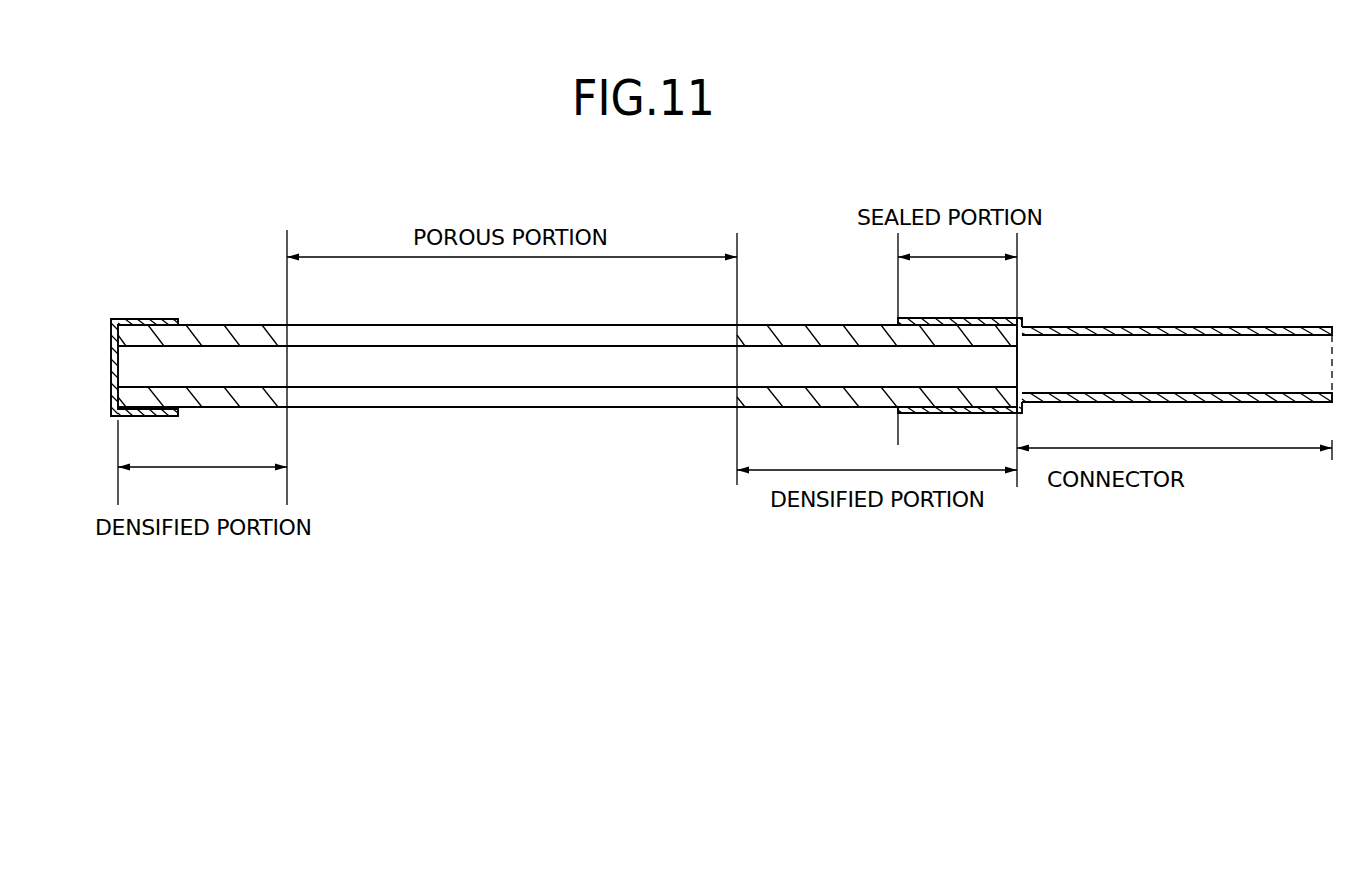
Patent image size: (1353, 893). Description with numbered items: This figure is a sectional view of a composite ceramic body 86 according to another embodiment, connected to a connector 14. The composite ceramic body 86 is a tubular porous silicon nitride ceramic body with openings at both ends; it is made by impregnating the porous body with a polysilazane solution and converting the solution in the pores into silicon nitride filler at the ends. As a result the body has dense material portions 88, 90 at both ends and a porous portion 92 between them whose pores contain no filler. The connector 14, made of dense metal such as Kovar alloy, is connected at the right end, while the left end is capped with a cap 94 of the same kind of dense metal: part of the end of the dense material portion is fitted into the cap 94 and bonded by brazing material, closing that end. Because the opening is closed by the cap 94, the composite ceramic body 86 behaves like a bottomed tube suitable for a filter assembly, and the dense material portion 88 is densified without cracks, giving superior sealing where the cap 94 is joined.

The connector 14 is at (1153, 312).
The composite ceramic body 86 is at (611, 422).
The dense material portion 88 is at (222, 334).
The dense material portion 90 is at (812, 334).
The porous portion 92 is at (463, 396).
The cap 94 is at (110, 372).